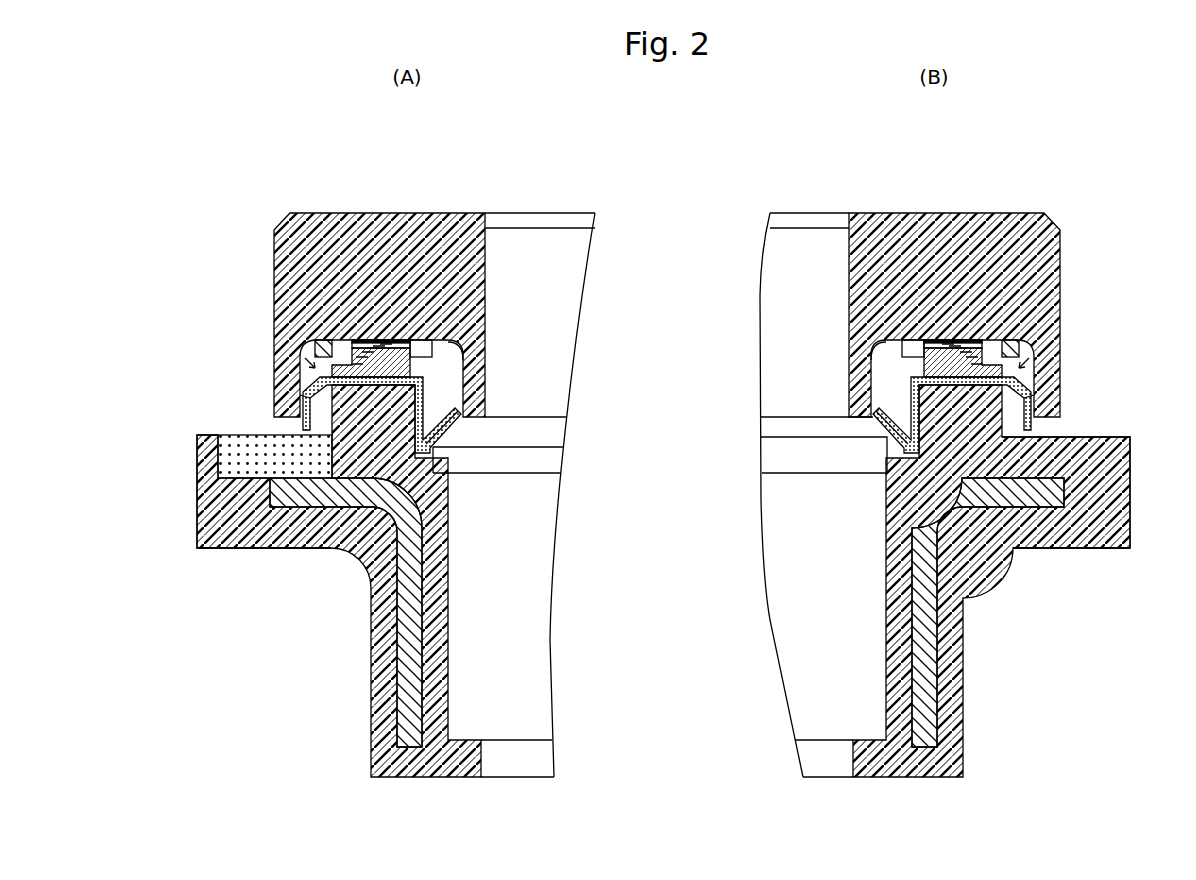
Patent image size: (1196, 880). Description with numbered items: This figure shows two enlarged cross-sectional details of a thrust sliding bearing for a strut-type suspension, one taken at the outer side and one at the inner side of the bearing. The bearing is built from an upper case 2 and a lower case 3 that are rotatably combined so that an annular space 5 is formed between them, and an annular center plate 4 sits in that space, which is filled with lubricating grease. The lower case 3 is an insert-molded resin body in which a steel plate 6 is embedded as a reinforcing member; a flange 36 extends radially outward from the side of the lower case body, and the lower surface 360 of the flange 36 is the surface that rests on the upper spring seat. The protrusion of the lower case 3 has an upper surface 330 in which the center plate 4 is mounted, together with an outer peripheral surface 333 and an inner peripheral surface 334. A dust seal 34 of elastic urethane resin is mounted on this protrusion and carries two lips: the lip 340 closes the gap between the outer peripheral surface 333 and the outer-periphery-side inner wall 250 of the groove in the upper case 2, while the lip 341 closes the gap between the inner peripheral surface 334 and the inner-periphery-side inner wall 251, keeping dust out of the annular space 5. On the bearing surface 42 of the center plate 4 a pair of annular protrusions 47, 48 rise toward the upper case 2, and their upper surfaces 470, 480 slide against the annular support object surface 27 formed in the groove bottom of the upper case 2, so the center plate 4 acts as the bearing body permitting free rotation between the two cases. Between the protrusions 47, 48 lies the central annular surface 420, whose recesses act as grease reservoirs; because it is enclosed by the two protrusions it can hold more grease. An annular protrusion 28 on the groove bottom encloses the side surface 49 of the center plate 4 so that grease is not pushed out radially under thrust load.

The upper case 2 is at (434, 212).
The lower case 3 is at (371, 695).
The center plate 4 is at (455, 325).
The annular space 5 is at (325, 366).
The steel plate 6 is at (320, 507).
The support object surface 27 is at (386, 342).
The protrusion 28 is at (322, 349).
The dust seal 34 is at (213, 440).
The flange 36 is at (200, 485).
The bearing surface 42 is at (373, 345).
The annular protrusion 47 is at (393, 342).
The annular protrusion 48 is at (368, 350).
The side surface 49 is at (357, 362).
The outer-periphery-side inner wall 250 is at (345, 378).
The inner-periphery-side inner wall 251 is at (445, 352).
The upper surface of the protrusion 330 is at (305, 420).
The outer peripheral surface of the protrusion 333 is at (1035, 430).
The inner peripheral surface of the protrusion 334 is at (440, 435).
The lip 340 is at (310, 395).
The lip 341 is at (458, 380).
The lower surface of the flange 360 is at (250, 549).
The central annular surface 420 is at (379, 343).
The upper surface 470 is at (404, 342).
The upper surface 480 is at (362, 355).